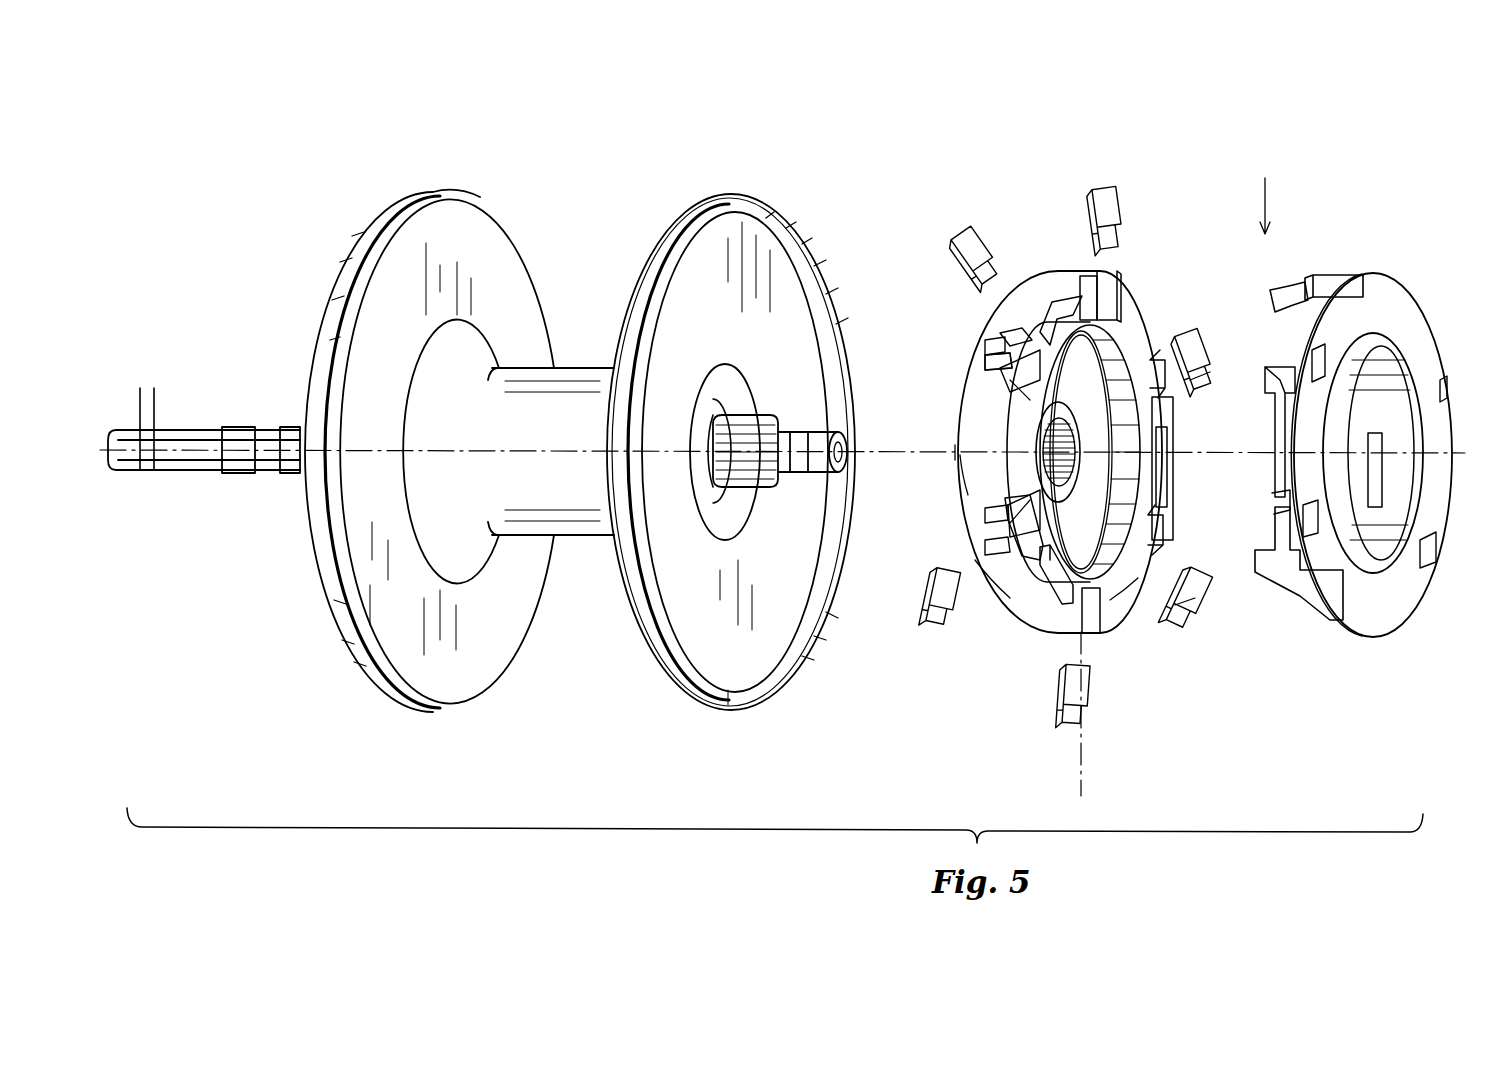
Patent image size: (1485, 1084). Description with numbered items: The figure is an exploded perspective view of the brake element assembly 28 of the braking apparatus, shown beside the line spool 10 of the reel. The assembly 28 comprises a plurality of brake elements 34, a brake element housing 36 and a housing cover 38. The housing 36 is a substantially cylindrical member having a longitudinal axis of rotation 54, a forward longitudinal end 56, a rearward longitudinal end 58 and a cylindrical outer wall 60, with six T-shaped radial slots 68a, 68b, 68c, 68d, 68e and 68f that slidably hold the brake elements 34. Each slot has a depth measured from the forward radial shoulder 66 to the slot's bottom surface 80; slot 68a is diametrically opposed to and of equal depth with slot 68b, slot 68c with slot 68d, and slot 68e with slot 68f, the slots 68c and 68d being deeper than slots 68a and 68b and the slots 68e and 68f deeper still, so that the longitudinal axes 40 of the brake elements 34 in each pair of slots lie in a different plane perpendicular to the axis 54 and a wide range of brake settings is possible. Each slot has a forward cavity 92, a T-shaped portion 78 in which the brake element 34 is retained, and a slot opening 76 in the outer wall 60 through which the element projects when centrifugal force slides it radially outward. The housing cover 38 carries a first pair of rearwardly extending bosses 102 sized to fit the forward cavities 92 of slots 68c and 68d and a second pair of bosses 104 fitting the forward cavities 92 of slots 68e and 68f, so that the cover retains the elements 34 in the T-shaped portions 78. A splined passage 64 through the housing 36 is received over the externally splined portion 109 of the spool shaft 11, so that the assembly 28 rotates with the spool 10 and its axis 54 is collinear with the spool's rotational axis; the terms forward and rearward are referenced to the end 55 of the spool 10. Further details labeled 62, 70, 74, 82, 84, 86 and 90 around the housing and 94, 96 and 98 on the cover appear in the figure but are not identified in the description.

The line spool 10 is at (490, 262).
The spool shaft 11 is at (246, 430).
The brake element assembly 28 is at (1264, 190).
The brake elements 34 is at (975, 238).
The brake element housing 36 is at (1128, 306).
The housing cover 38 is at (1339, 435).
The longitudinal axes of the brake elements 40 is at (1083, 778).
The longitudinal axis of rotation 54 is at (880, 448).
The end of line spool 55 is at (755, 562).
The forward longitudinal end 56 is at (1118, 598).
The rearward longitudinal end 58 is at (958, 480).
The cylindrical outer wall 60 is at (1000, 588).
The central hub boss 62 is at (1128, 492).
The splined passage 64 is at (1062, 424).
The forward radial shoulder 66 is at (1020, 433).
The T-shaped radial slot 68a is at (1090, 618).
The T-shaped radial slot 68b is at (1108, 280).
The T-shaped radial slot 68c is at (1018, 530).
The T-shaped radial slot 68d is at (1158, 382).
The T-shaped radial slot 68e is at (1022, 330).
The T-shaped radial slot 68f is at (1152, 552).
The lug 70 is at (1086, 300).
The pawl recess 74 is at (1025, 530).
The slot openings 76 is at (986, 514).
The T-shaped portions of housing slots 78 is at (988, 546).
The slot bottom surface 80 is at (987, 362).
The pawl tip 82 is at (986, 345).
The pawl body 84 is at (1003, 374).
The pawl spring 86 is at (1008, 335).
The pad face 90 is at (1190, 385).
The forward cavities of housing slots 92 is at (1025, 395).
The plate bore 94 is at (1390, 385).
The plate slots 96 is at (1415, 345).
The plate tabs 98 is at (1318, 290).
The first pair of rearwardly extending bosses 102 is at (1280, 526).
The second pair of rearwardly extending bosses 104 is at (1282, 350).
The externally splined portion of spool shaft 109 is at (742, 400).